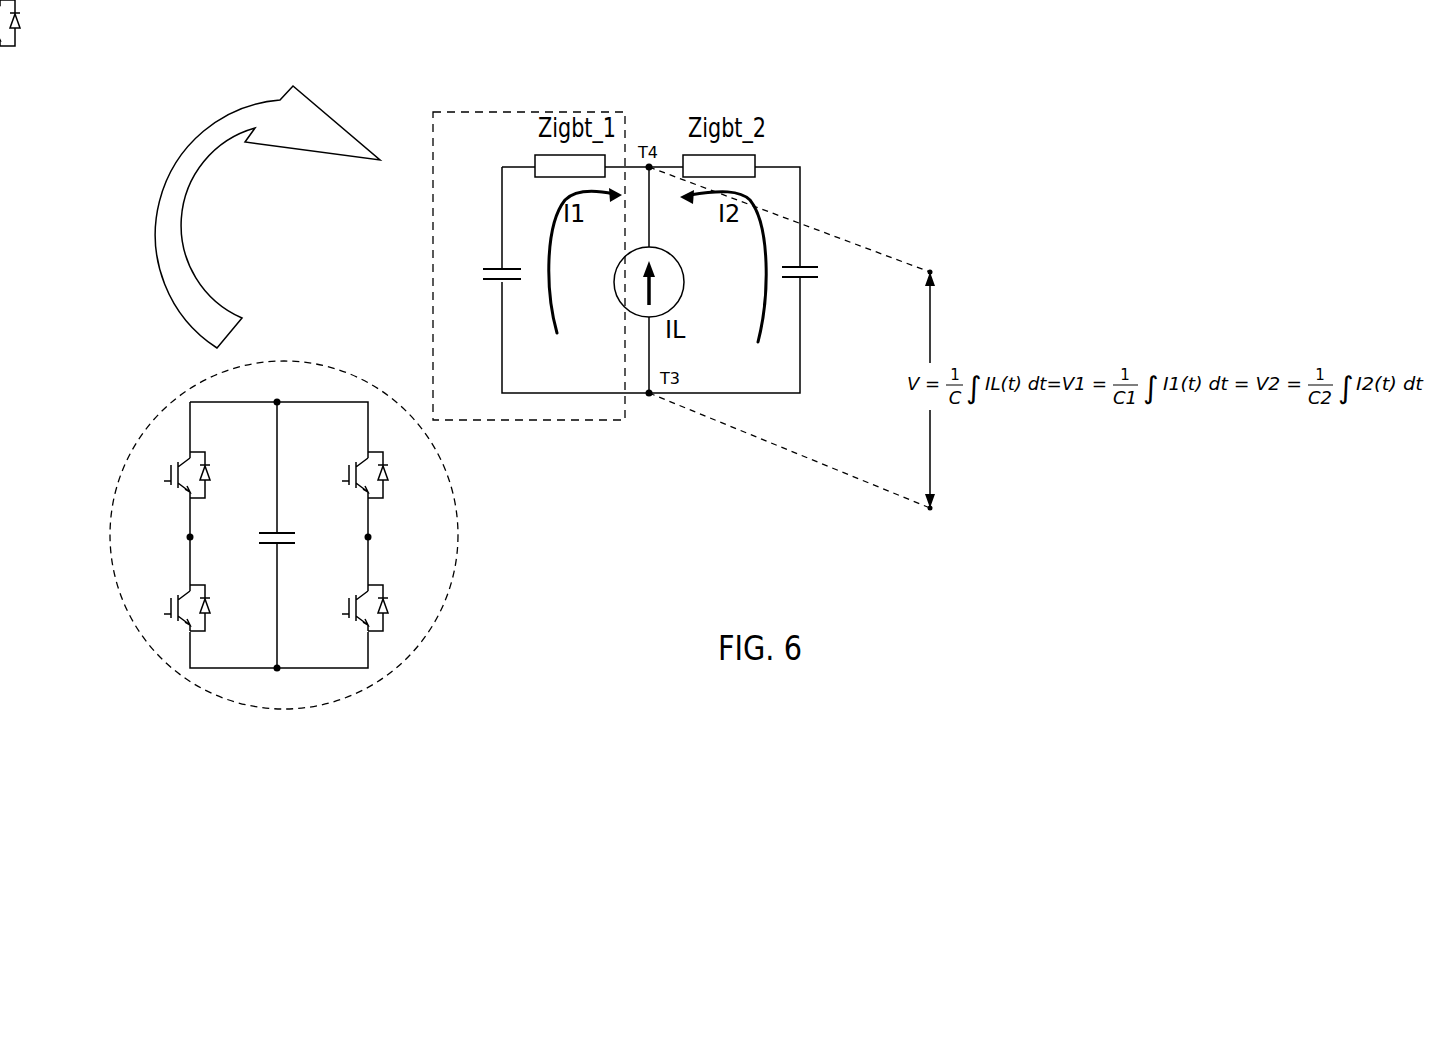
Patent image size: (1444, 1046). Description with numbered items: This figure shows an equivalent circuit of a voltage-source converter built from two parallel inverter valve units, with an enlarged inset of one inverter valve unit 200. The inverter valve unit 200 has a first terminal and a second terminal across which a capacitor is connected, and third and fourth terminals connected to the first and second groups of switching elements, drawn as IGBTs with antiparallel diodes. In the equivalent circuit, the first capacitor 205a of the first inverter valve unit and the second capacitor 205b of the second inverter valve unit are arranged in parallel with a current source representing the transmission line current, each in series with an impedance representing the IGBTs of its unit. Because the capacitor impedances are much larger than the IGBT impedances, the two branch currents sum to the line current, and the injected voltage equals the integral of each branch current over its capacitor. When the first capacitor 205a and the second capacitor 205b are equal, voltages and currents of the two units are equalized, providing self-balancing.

The inverter valve unit 200 is at (338, 373).
The capacitor C1 205a is at (468, 243).
The capacitor C2 205b is at (831, 300).